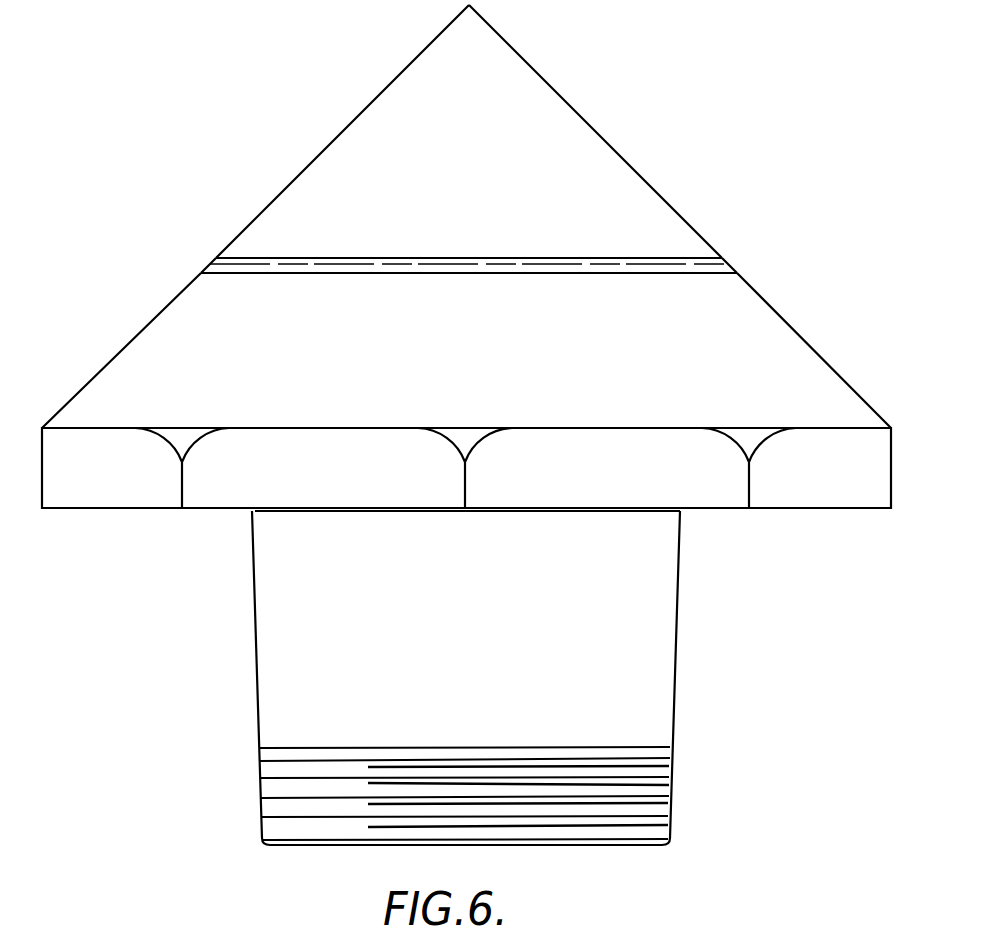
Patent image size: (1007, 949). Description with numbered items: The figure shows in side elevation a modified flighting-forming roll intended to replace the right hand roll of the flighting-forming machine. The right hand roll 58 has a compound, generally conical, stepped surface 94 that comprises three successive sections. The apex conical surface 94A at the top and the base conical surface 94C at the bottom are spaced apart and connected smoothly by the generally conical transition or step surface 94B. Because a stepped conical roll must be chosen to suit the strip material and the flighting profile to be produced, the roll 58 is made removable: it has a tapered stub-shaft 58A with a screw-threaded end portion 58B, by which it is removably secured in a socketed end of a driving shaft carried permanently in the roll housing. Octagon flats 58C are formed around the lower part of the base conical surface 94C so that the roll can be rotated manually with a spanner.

The compound, generally-conical, stepped surface 94 is at (466, 216).
The apex conical surface 94A is at (322, 147).
The transition or step surface 94B is at (206, 265).
The base conical surface 94C is at (150, 322).
The right hand roll 58 is at (466, 600).
The tapered stub-shaft 58A is at (256, 655).
The screw-threaded end portion 58B is at (262, 778).
The octagon flats 58C is at (130, 457).